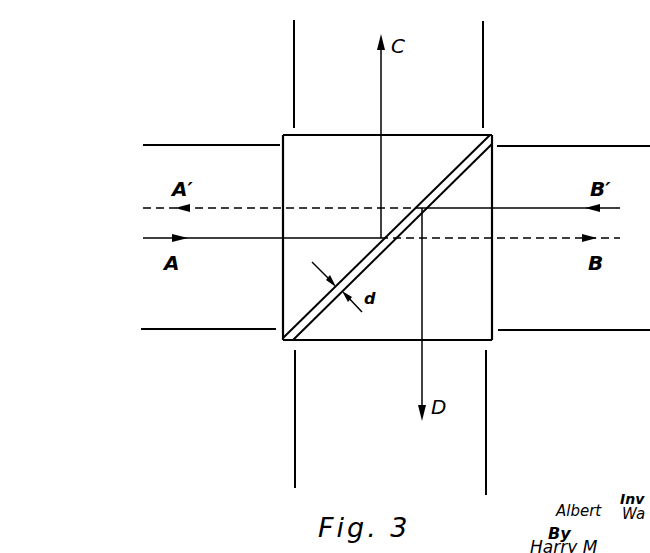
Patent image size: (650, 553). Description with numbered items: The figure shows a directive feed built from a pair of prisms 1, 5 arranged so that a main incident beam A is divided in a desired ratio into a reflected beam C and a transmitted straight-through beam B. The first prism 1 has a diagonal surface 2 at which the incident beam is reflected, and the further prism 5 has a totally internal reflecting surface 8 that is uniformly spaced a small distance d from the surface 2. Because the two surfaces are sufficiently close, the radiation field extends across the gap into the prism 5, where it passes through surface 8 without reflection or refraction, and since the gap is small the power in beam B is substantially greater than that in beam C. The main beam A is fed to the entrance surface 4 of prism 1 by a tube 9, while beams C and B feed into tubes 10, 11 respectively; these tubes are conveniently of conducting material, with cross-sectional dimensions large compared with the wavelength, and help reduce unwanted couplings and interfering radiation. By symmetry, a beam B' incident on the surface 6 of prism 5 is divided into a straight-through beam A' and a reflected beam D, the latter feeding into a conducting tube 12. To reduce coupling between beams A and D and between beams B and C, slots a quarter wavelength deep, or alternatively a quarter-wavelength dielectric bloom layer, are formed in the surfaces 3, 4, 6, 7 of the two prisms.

The prism 1 is at (370, 221).
The surface of the prism 2 is at (448, 166).
The surface 3 is at (323, 135).
The surface 4 is at (283, 278).
The further prism 5 is at (399, 259).
The surface of the prism 6 is at (500, 184).
The surface 7 is at (389, 340).
The totally internal reflecting surface 8 is at (449, 173).
The tube 9 is at (197, 145).
The tube 10 is at (294, 54).
The tube 11 is at (607, 146).
The conducting tube 12 is at (295, 455).